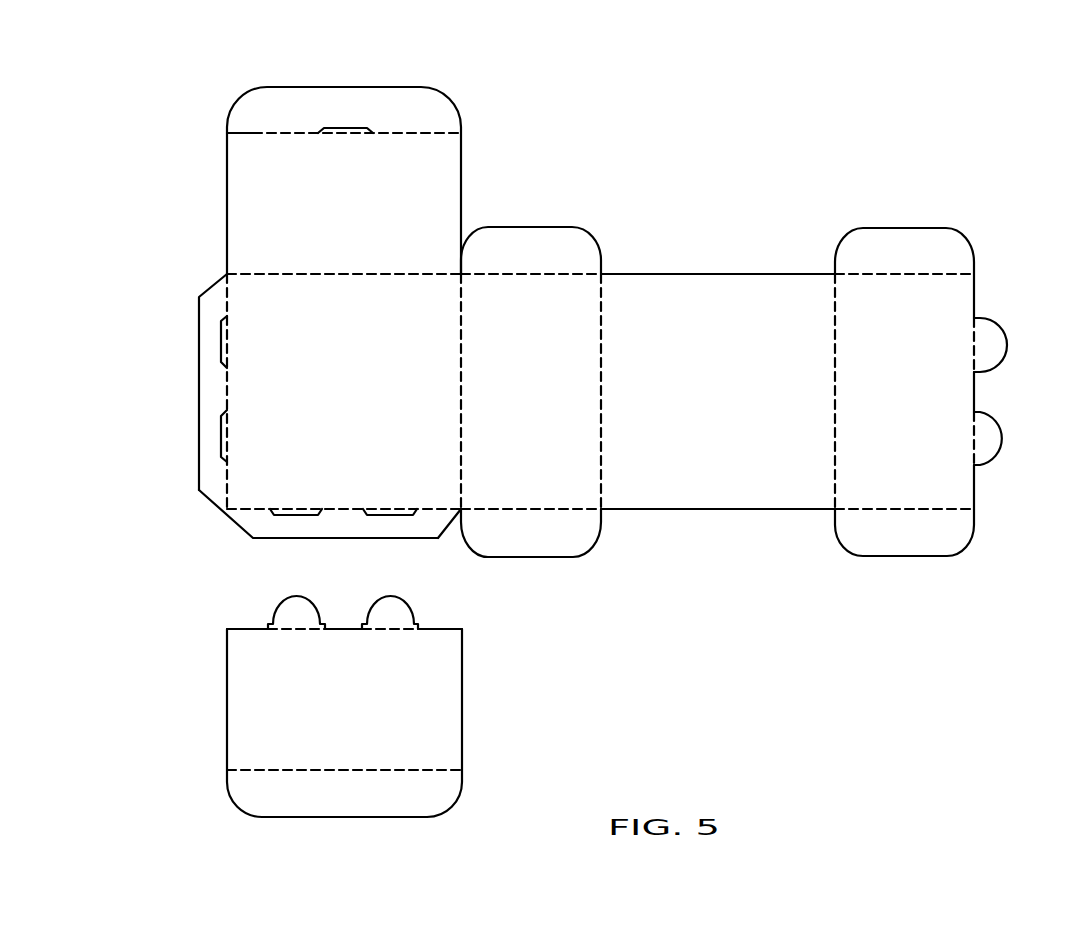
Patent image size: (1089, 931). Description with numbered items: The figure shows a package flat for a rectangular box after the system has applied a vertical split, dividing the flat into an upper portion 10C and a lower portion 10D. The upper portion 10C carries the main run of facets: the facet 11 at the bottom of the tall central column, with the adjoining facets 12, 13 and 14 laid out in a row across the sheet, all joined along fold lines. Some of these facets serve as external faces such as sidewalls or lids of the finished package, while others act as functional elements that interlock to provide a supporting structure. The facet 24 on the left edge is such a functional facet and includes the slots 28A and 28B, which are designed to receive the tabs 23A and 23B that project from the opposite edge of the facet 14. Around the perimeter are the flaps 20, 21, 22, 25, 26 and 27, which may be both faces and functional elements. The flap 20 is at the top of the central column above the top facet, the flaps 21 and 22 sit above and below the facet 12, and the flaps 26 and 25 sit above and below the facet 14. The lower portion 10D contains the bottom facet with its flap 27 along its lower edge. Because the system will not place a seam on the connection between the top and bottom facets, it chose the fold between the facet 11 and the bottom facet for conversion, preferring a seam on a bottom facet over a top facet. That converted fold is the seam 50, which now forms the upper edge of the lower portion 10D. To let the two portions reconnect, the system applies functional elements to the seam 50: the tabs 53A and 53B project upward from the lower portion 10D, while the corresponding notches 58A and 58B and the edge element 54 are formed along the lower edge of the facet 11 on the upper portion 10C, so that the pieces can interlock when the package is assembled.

The upper portion 10C is at (785, 165).
The lower portion 10D is at (553, 732).
The facet 11 is at (253, 469).
The facet 12 is at (582, 333).
The facet 13 is at (732, 497).
The facet 14 is at (958, 485).
The flap 20 is at (423, 98).
The flap 21 is at (519, 242).
The flap 22 is at (583, 523).
The tab 23A is at (992, 347).
The tab 23B is at (992, 443).
The facet 24 is at (198, 362).
The flap 25 is at (913, 538).
The flap 26 is at (907, 242).
The flap 27 is at (243, 795).
The slot 28A is at (220, 325).
The slot 28B is at (222, 437).
The seam 50 is at (252, 628).
The functional element 53A is at (287, 630).
The functional element 53B is at (392, 630).
The functional element 54 is at (442, 537).
The functional element 58A is at (290, 517).
The functional element 58B is at (383, 517).